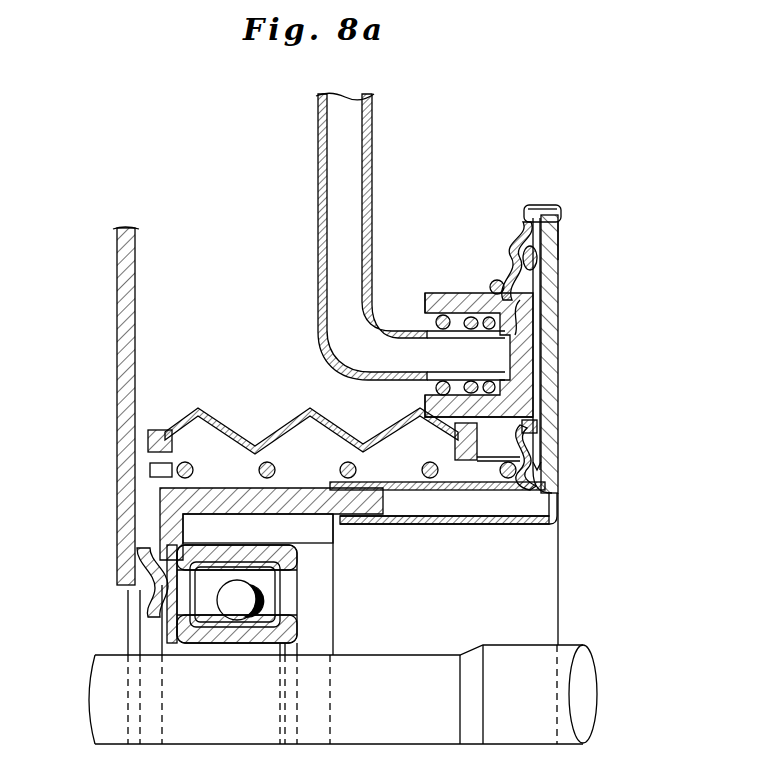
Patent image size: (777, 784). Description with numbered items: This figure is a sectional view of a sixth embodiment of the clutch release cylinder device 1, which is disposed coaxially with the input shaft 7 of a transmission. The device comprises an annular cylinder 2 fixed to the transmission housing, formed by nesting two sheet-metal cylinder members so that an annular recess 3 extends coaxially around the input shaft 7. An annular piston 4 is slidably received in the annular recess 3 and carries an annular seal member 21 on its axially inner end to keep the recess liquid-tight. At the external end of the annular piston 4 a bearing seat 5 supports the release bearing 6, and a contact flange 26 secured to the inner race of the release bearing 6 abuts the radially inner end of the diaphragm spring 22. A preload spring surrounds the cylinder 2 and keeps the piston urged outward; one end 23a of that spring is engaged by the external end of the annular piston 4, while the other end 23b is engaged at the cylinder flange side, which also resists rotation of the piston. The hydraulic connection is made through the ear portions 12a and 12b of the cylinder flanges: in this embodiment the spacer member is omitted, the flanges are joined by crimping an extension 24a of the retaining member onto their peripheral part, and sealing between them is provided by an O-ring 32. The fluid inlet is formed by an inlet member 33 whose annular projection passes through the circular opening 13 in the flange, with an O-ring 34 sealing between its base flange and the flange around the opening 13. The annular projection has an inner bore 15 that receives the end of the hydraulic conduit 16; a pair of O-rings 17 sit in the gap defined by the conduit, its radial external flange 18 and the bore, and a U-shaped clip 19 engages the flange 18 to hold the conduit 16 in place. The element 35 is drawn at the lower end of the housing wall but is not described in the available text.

The clutch release cylinder device 1 is at (258, 258).
The annular cylinder 2 is at (399, 482).
The annular recess 3 is at (500, 512).
The annular piston 4 is at (308, 520).
The bearing seat 5 is at (160, 507).
The release bearing 6 is at (255, 602).
The input shaft 7 is at (405, 660).
The ear portion 12a is at (510, 250).
The ear portion 12b is at (563, 242).
The circular opening 13 is at (540, 313).
The inner bore 15 is at (488, 338).
The hydraulic conduit 16 is at (372, 155).
The O-rings 17 is at (483, 368).
The radial external flange 18 is at (480, 408).
The U-shaped clip 19 is at (428, 303).
The annular seal member 21 is at (401, 502).
The diaphragm spring 22 is at (117, 351).
The end of preload spring 23a is at (183, 452).
The other end of preload spring 23b is at (500, 277).
The extension of retaining member 24a is at (543, 233).
The contact flange 26 is at (132, 588).
The O-ring 32 is at (538, 261).
The inlet member 33 is at (440, 292).
The O-ring 34 is at (493, 280).
The wall end 35 is at (552, 492).